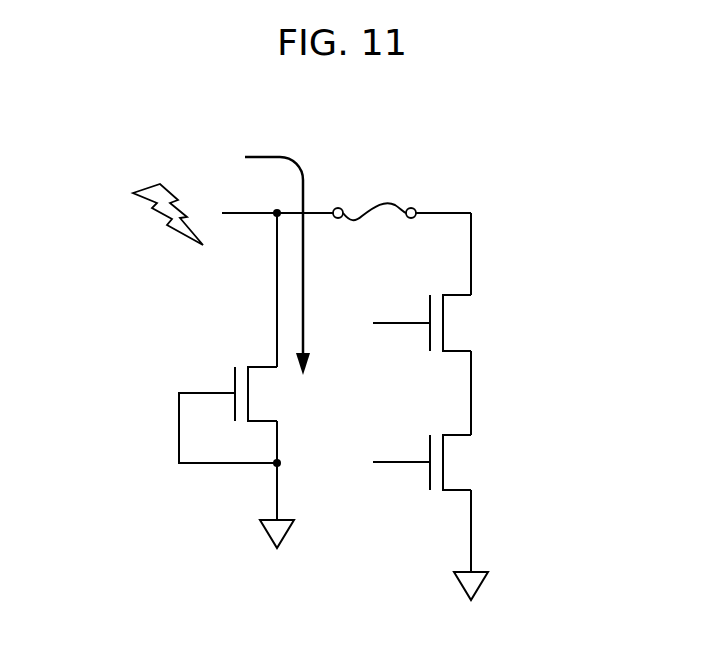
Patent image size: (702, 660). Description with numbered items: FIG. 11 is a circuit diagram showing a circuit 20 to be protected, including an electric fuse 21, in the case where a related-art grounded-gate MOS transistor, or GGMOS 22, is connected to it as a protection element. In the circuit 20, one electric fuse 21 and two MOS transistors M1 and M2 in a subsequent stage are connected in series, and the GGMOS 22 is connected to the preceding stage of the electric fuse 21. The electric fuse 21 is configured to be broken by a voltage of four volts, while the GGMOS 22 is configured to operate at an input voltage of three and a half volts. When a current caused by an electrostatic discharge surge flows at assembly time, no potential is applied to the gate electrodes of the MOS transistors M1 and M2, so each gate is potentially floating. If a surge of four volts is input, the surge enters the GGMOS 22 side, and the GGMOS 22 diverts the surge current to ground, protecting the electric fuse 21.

The ESD protection circuit 20 is at (383, 93).
The electric fuse 21 is at (357, 219).
The GGMOS 22 is at (152, 441).
The MOS transistor M1 is at (456, 323).
The MOS transistor M2 is at (456, 462).